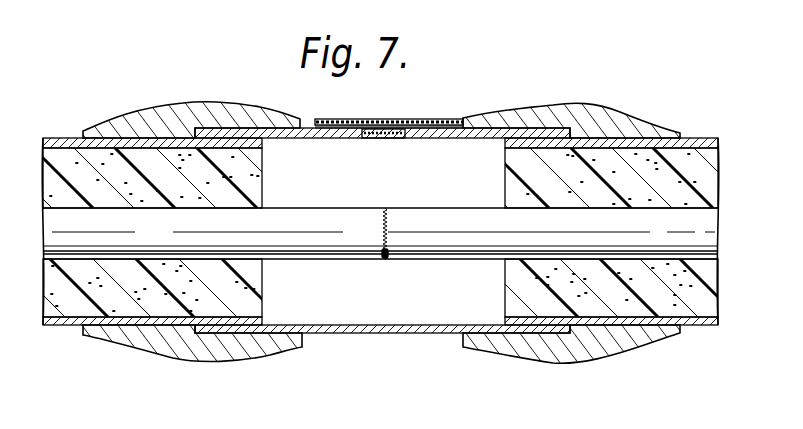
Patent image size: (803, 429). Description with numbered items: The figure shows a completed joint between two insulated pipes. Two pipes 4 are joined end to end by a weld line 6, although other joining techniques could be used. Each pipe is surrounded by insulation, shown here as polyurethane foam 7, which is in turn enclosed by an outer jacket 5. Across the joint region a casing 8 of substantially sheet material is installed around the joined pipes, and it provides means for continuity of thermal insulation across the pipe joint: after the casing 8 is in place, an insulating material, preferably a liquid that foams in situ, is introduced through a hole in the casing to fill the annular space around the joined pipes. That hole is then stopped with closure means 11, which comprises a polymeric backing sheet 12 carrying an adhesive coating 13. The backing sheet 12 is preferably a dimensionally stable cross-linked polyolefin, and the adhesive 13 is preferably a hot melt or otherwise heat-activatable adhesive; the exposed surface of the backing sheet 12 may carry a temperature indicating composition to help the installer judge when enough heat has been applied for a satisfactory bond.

The pipe 4 is at (72, 217).
The outer jacket 5 is at (50, 326).
The weld line 6 is at (383, 225).
The polyurethane foam 7 is at (690, 290).
The casing 8 is at (537, 132).
The closure means 11 is at (328, 114).
The polymeric backing sheet 12 is at (413, 124).
The adhesive coating 13 is at (453, 124).